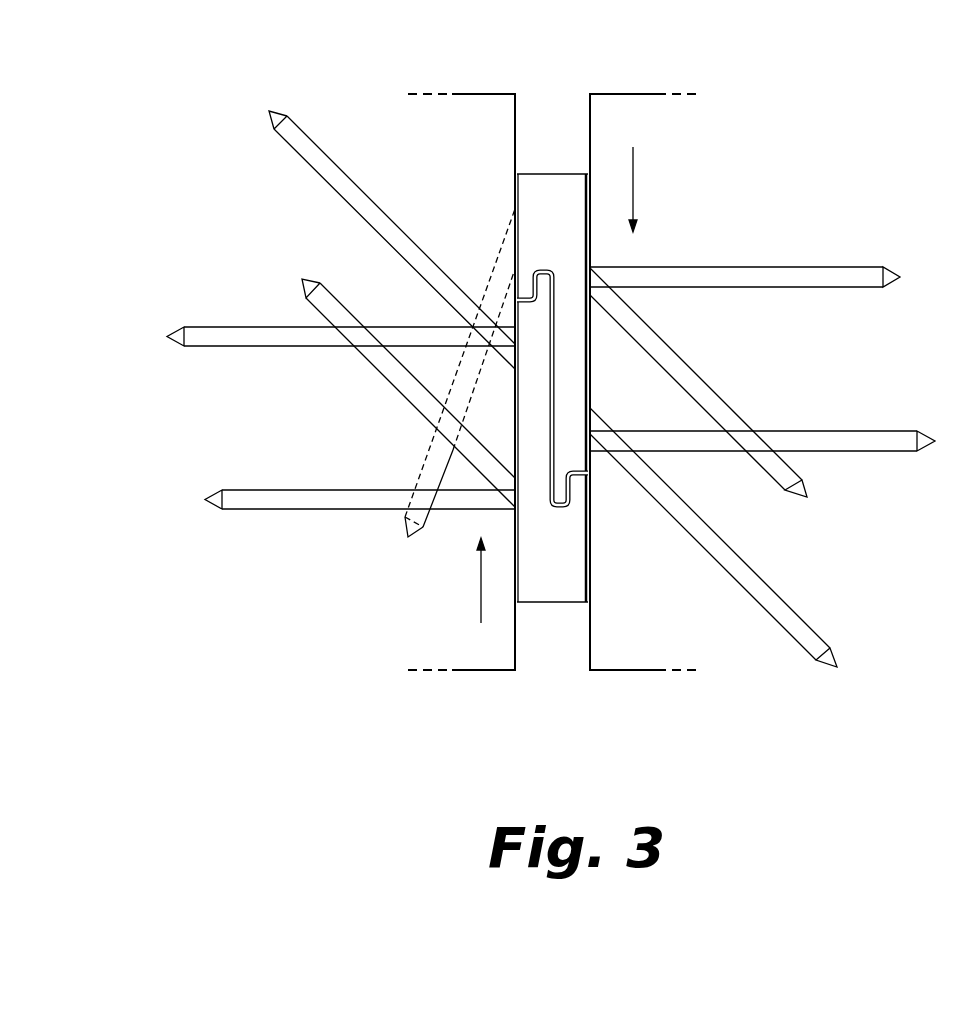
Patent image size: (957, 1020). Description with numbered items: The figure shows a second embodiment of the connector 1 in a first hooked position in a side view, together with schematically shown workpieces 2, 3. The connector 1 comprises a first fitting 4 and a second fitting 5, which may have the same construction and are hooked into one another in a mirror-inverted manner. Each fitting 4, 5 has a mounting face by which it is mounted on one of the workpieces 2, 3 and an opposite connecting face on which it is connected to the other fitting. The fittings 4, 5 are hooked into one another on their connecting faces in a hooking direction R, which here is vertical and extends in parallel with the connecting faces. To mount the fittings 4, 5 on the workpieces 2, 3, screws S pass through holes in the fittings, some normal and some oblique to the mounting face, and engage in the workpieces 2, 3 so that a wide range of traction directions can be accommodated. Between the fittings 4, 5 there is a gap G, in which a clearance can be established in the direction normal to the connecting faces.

The connector 1 is at (554, 360).
The workpiece 2 is at (467, 102).
The workpiece 3 is at (623, 105).
The first fitting 4 is at (557, 592).
The second fitting 5 is at (555, 182).
The gap G is at (550, 392).
The screws S is at (330, 168).
The hooking direction R is at (555, 385).